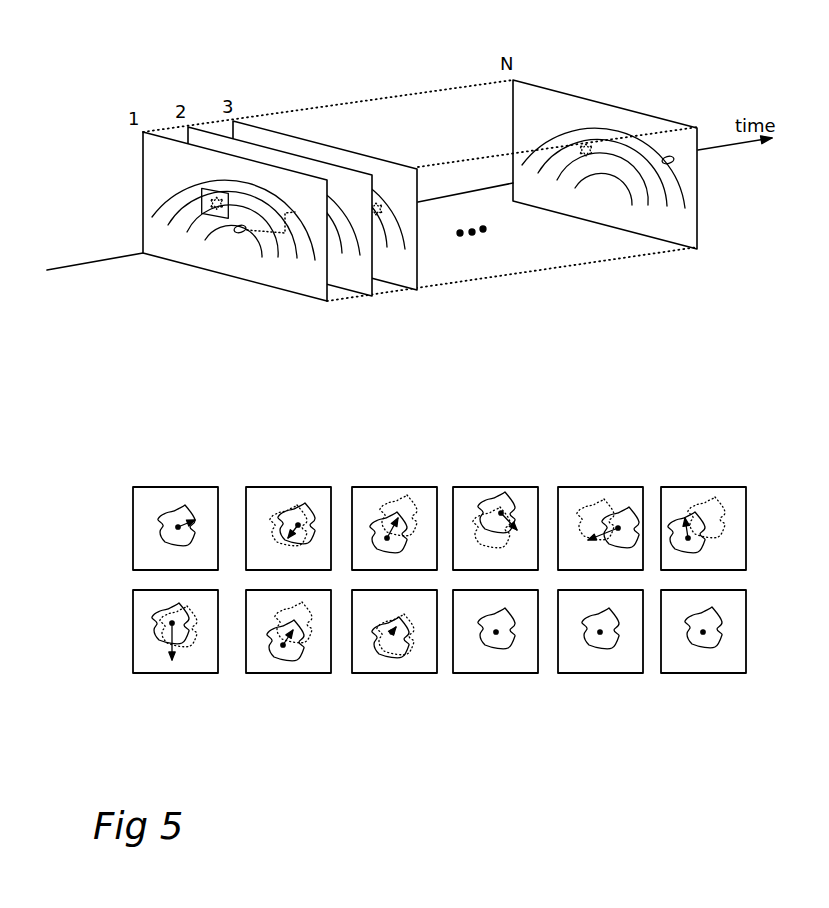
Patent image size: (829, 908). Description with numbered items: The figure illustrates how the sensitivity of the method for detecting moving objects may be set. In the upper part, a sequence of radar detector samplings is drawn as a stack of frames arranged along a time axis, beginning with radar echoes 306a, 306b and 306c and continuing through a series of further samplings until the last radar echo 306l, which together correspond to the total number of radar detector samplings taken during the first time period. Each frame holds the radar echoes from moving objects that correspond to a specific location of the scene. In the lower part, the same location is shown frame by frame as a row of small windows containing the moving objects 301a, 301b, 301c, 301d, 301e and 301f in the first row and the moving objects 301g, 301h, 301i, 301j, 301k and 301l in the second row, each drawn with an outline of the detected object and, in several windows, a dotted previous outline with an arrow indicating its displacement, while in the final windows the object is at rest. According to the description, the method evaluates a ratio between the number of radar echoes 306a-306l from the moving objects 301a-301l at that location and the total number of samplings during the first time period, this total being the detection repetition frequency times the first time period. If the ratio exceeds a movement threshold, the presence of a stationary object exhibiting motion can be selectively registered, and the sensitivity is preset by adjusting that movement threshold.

The radar echo 306a is at (285, 268).
The radar echo 306b is at (347, 260).
The radar echo 306c is at (398, 248).
The radar echo 306l is at (670, 207).
The moving object 301a is at (158, 519).
The moving object 301b is at (278, 517).
The moving object 301c is at (370, 526).
The moving object 301d is at (478, 506).
The moving object 301e is at (602, 521).
The moving object 301f is at (668, 526).
The moving object 301g is at (159, 640).
The moving object 301h is at (274, 657).
The moving object 301i is at (379, 654).
The moving object 301j is at (485, 645).
The moving object 301k is at (589, 645).
The moving object 301l is at (692, 644).